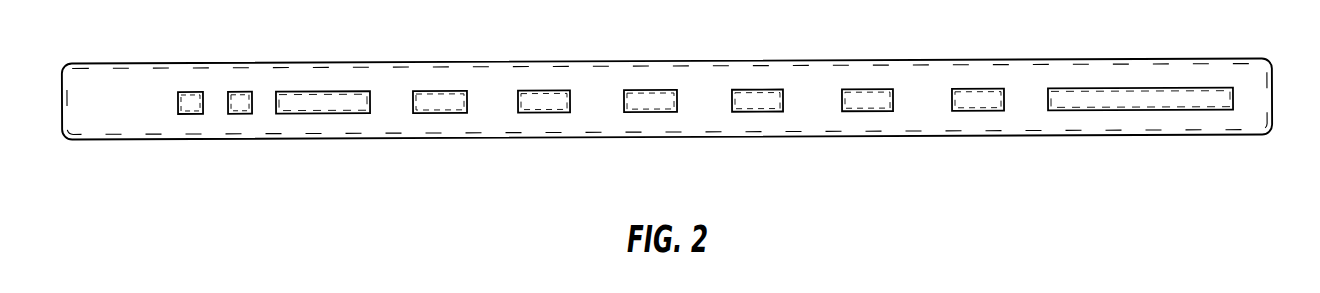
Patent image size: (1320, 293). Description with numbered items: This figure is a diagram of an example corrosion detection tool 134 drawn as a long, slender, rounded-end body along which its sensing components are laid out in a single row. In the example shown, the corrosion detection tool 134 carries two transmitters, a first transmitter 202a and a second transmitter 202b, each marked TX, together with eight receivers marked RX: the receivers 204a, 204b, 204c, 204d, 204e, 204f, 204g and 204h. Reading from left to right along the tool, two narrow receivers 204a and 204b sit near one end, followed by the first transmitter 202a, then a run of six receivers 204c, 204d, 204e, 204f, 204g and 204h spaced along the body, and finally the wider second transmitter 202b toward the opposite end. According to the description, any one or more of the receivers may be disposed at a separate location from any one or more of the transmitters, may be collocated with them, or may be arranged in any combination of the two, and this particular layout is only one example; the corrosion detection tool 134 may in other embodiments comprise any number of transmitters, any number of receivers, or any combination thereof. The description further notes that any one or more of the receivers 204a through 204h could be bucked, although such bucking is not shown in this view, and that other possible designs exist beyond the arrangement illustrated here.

The corrosion detection tool 134 is at (930, 73).
The transmitter 202a is at (322, 112).
The transmitter 202b is at (1140, 112).
The receiver 204a is at (190, 112).
The receiver 204b is at (242, 112).
The receiver 204c is at (440, 112).
The receiver 204d is at (542, 112).
The receiver 204e is at (650, 112).
The receiver 204f is at (758, 112).
The receiver 204g is at (867, 112).
The receiver 204h is at (980, 112).